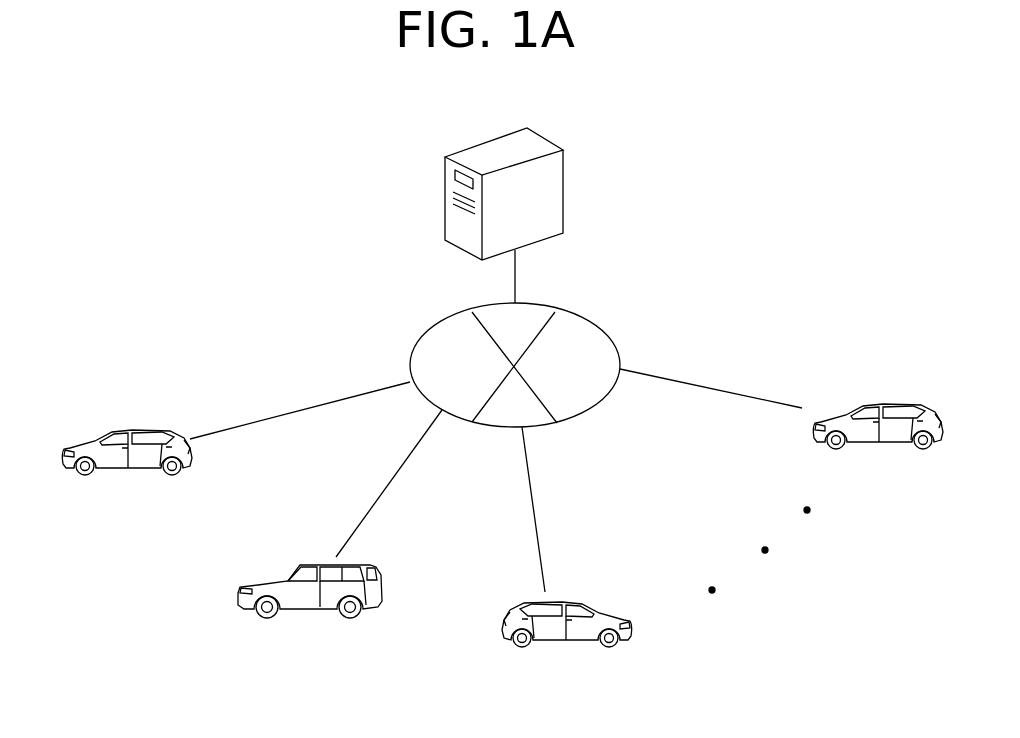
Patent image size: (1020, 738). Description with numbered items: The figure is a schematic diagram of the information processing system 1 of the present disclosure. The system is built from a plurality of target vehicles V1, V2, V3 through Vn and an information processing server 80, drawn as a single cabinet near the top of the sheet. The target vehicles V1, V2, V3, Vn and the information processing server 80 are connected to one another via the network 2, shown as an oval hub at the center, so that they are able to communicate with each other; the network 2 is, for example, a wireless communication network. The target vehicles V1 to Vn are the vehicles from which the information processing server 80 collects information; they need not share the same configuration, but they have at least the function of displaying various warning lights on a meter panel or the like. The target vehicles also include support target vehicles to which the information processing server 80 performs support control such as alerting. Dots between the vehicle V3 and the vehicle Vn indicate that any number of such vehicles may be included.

The information processing system 1 is at (712, 184).
The information processing server 80 is at (500, 138).
The network 2 is at (590, 320).
The target vehicle V1 is at (130, 472).
The target vehicle V2 is at (305, 602).
The target vehicle V3 is at (572, 633).
The target vehicle Vn is at (878, 442).